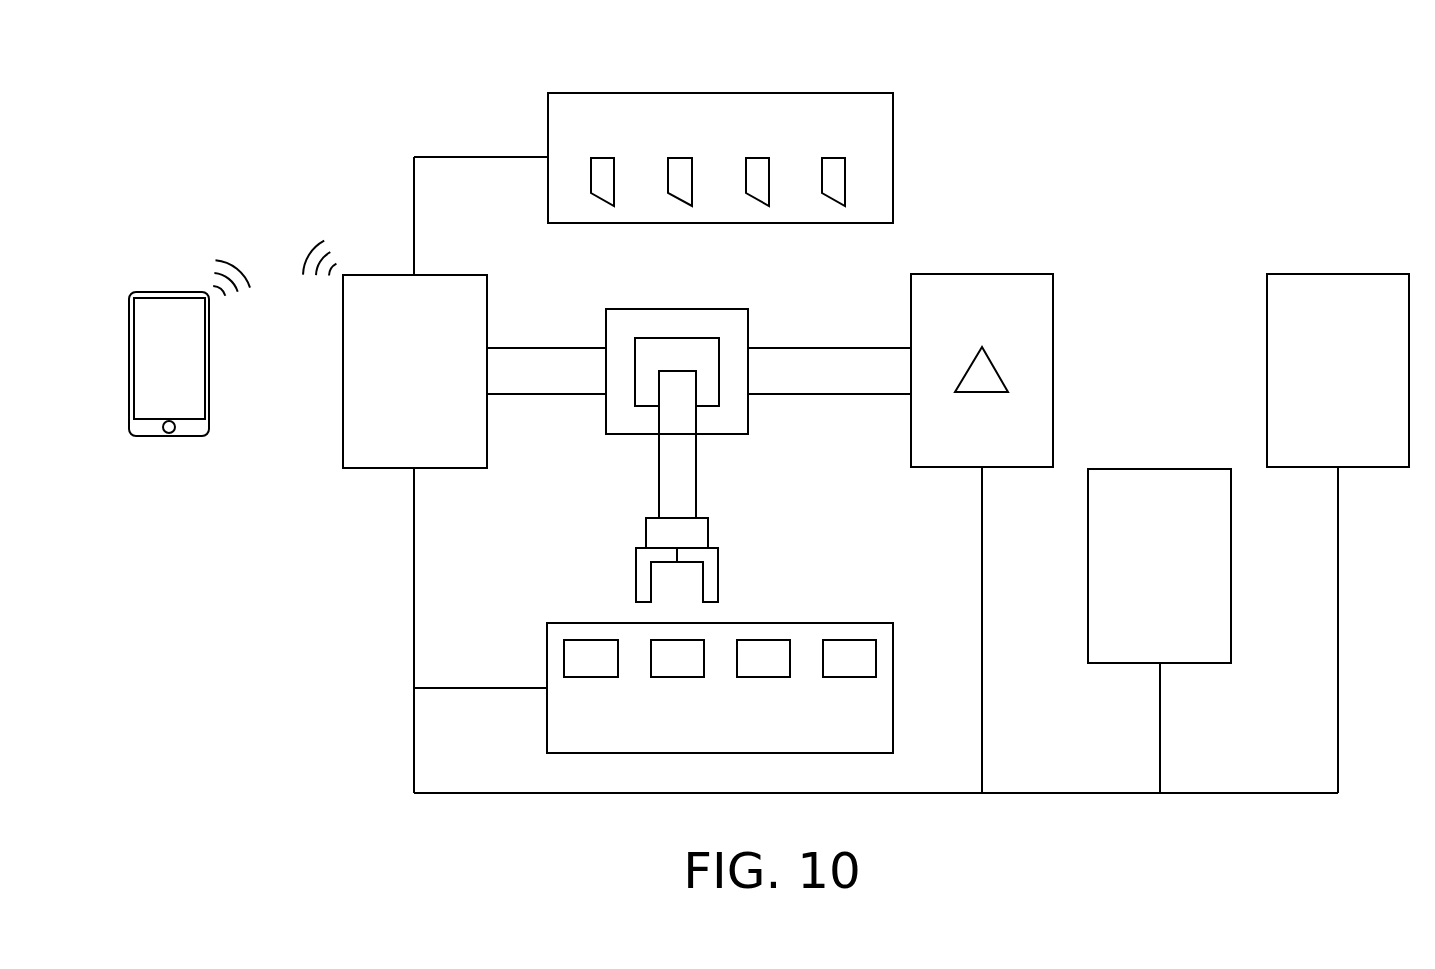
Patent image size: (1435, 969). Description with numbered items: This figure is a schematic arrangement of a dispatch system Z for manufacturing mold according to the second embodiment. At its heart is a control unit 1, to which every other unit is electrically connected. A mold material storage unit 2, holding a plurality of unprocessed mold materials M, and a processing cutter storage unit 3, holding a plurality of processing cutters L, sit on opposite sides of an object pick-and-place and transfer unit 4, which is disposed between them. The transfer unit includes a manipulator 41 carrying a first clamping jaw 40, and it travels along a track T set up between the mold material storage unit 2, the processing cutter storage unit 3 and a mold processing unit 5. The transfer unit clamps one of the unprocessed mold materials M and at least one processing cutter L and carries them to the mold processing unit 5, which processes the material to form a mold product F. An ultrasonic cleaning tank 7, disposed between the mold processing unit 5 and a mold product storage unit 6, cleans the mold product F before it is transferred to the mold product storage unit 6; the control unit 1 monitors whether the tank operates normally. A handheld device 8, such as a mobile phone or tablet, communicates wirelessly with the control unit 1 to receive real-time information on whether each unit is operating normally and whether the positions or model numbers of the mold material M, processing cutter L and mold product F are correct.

The dispatch system for manufacturing mold Z is at (143, 88).
The control unit 1 is at (350, 373).
The mold material storage unit 2 is at (752, 655).
The processing cutter storage unit 3 is at (752, 186).
The object pick-and-place and transfer unit 4 is at (633, 315).
The mold processing unit 5 is at (1000, 329).
The mold product storage unit 6 is at (1342, 277).
The ultrasonic cleaning tank 7 is at (1163, 472).
The handheld device 8 is at (163, 297).
The first clamping jaw 40 is at (643, 580).
The manipulator 41 is at (668, 480).
The processing cutter L is at (830, 193).
The unprocessed mold material M is at (852, 645).
The track T is at (545, 352).
The mold product F is at (993, 375).